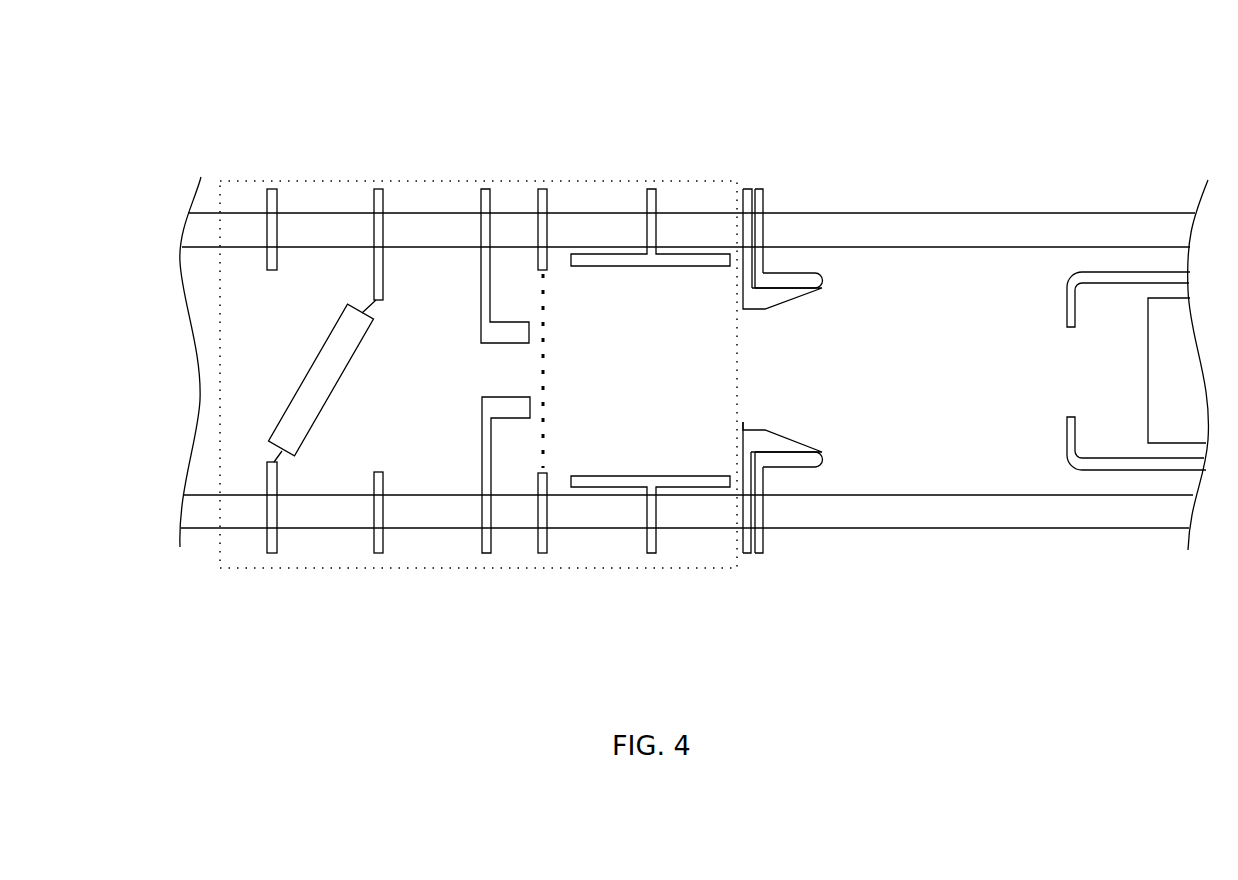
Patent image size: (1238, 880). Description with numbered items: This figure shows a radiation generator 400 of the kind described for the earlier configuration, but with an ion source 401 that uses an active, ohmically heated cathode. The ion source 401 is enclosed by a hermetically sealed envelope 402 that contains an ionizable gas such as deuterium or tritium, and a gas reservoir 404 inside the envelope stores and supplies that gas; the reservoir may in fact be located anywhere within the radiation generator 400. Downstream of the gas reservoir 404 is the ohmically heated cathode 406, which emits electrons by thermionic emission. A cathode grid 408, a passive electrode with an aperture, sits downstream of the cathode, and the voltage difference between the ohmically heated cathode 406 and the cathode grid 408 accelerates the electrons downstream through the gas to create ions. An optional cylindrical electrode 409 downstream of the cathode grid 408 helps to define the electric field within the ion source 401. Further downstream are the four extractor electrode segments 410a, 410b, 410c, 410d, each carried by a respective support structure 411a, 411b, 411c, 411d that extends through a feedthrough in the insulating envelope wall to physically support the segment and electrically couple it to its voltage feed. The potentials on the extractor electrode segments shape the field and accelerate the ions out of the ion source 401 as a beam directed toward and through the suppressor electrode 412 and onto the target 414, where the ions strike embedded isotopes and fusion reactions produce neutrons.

The radiation generator 400 is at (183, 83).
The ion source 401 is at (264, 180).
The sealed envelope 402 is at (185, 222).
The gas reservoir 404 is at (277, 425).
The ohmically heated cathode 406 is at (508, 322).
The cathode grid 408 is at (543, 288).
The cylindrical electrode 409 is at (623, 256).
The extractor electrode segment 410a is at (743, 297).
The extractor electrode segment 410b is at (780, 273).
The extractor electrode segment 410c is at (741, 436).
The extractor electrode segment 410d is at (787, 468).
The support structure 411a is at (740, 217).
The support structure 411b is at (763, 217).
The support structure 411c is at (743, 518).
The support structure 411d is at (763, 517).
The suppressor electrode 412 is at (1077, 275).
The target 414 is at (1170, 297).